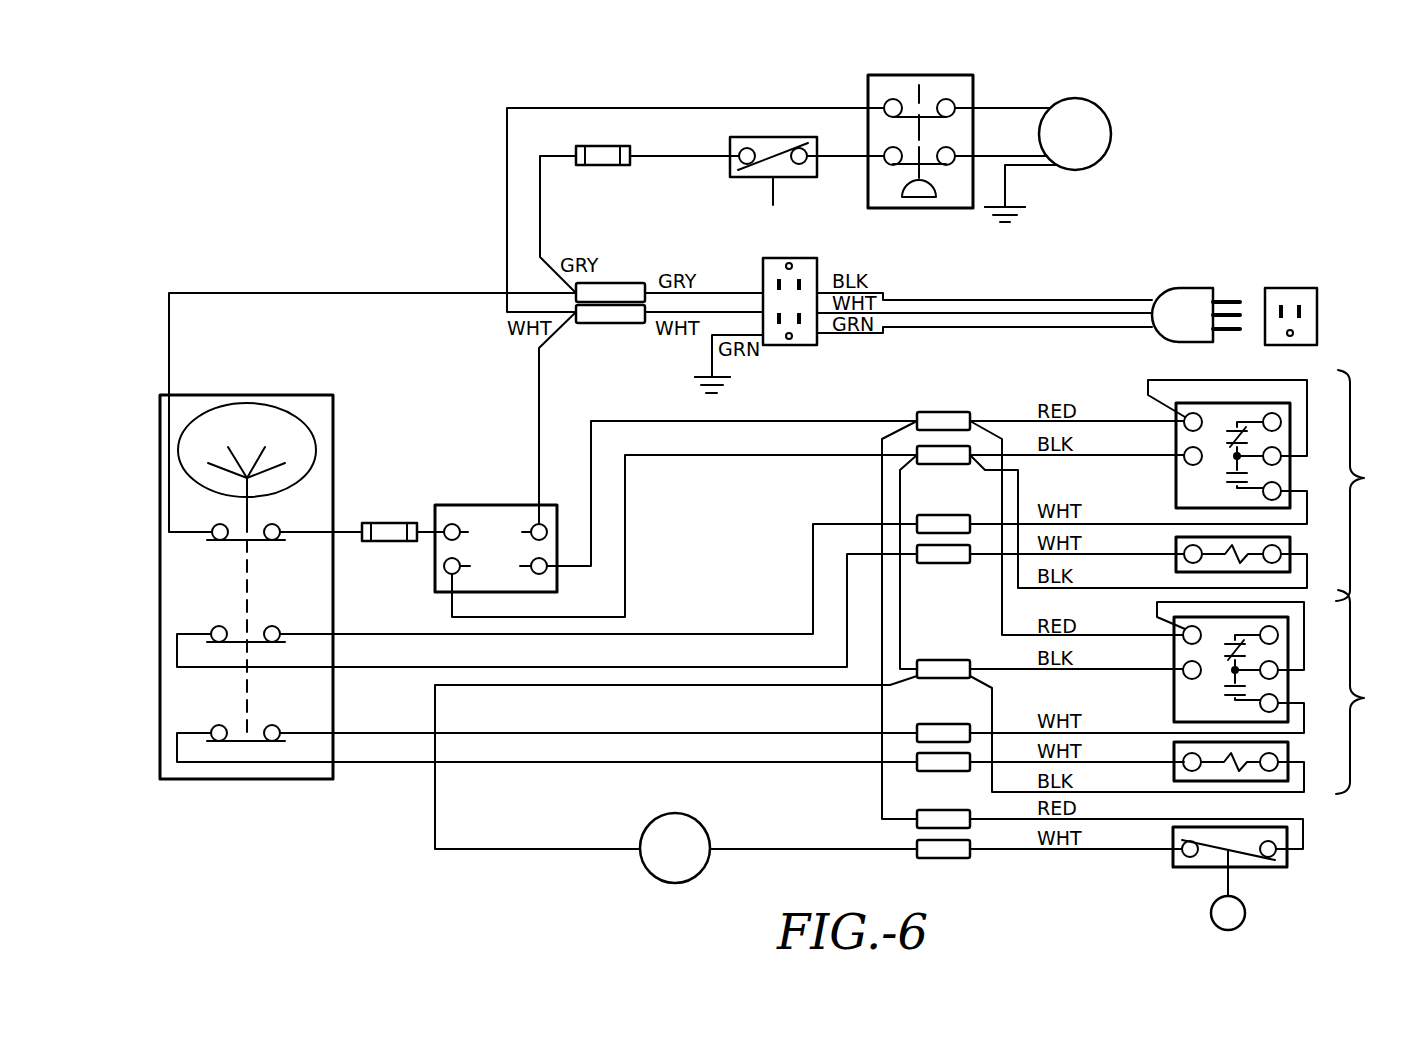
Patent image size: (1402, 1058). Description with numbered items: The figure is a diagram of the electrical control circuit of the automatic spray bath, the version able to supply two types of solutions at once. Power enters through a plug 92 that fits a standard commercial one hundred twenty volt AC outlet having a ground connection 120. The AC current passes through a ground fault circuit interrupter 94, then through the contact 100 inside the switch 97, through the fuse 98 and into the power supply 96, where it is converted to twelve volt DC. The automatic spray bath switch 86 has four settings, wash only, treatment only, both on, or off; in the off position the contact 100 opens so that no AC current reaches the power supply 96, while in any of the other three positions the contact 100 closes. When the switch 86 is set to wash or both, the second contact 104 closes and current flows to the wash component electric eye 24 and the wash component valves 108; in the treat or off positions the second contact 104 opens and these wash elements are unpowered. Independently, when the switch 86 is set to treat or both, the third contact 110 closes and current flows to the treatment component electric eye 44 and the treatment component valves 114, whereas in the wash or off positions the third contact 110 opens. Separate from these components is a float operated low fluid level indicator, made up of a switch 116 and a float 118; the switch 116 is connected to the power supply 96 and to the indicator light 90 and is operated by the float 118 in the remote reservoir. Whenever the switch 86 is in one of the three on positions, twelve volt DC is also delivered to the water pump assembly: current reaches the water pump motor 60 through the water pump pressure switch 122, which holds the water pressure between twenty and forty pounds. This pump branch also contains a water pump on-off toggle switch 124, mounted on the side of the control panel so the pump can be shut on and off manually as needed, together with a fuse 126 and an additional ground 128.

The wash component electric eye 24 is at (1288, 416).
The treatment component electric eye 44 is at (1285, 630).
The water pump motor 60 is at (1092, 108).
The automatic spray bath switch 86 is at (280, 410).
The indicator light 90 is at (673, 884).
The plug 92 is at (1188, 290).
The ground fault circuit interrupter 94 is at (795, 258).
The power supply 96 is at (445, 505).
The switch 97 is at (193, 400).
The fuse 98 is at (386, 523).
The contact 100 is at (268, 541).
The second contact 104 is at (270, 642).
The wash component valves 108 is at (1282, 548).
The third contact 110 is at (272, 742).
The treatment component valves 114 is at (1282, 758).
The switch 116 is at (1288, 840).
The float 118 is at (1246, 914).
The ground connection 120 is at (753, 377).
The water pump pressure switch 122 is at (975, 92).
The water pump on-off toggle switch 124 is at (748, 178).
The fuse 126 is at (598, 166).
The additional ground 128 is at (1046, 203).